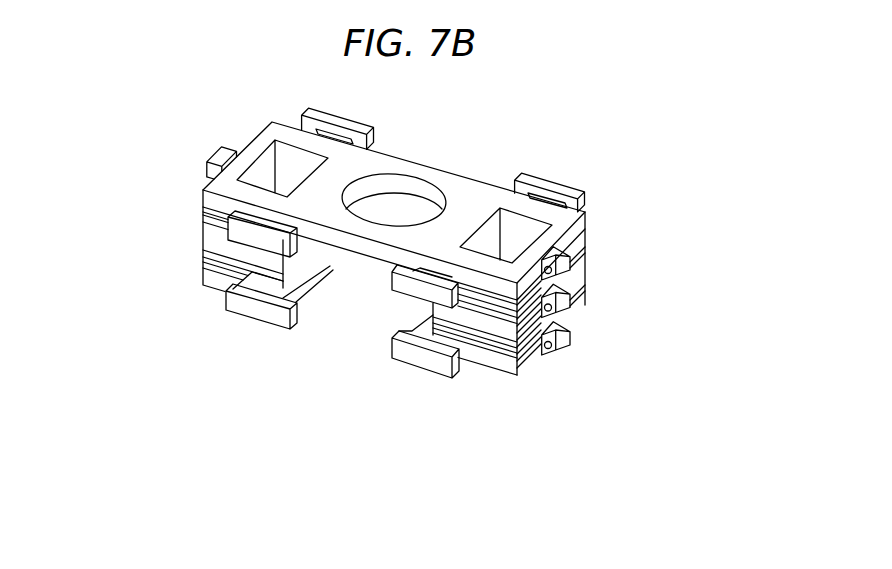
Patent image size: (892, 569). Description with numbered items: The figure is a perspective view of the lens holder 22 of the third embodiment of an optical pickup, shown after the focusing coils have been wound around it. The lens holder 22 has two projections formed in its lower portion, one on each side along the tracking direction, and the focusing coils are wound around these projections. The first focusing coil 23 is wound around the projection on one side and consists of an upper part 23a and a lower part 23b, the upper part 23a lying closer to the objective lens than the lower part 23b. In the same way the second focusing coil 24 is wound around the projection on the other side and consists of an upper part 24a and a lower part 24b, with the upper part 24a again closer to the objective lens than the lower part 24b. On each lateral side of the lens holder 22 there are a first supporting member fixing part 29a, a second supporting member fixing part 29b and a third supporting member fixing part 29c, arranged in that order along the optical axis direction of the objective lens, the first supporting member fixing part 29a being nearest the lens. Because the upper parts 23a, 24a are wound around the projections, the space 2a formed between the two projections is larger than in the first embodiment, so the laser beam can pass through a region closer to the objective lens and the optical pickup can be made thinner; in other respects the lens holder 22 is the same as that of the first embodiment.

The lens holder 22 is at (262, 142).
The first focusing coil 23 is at (107, 210).
The upper part 23a is at (205, 222).
The lower part 23b is at (205, 262).
The space 2a is at (356, 284).
The second focusing coil 24 is at (558, 423).
The upper part 24a is at (497, 310).
The lower part 24b is at (477, 347).
The first supporting member fixing part 29a is at (563, 268).
The second supporting member fixing part 29b is at (563, 305).
The third supporting member fixing part 29c is at (563, 343).